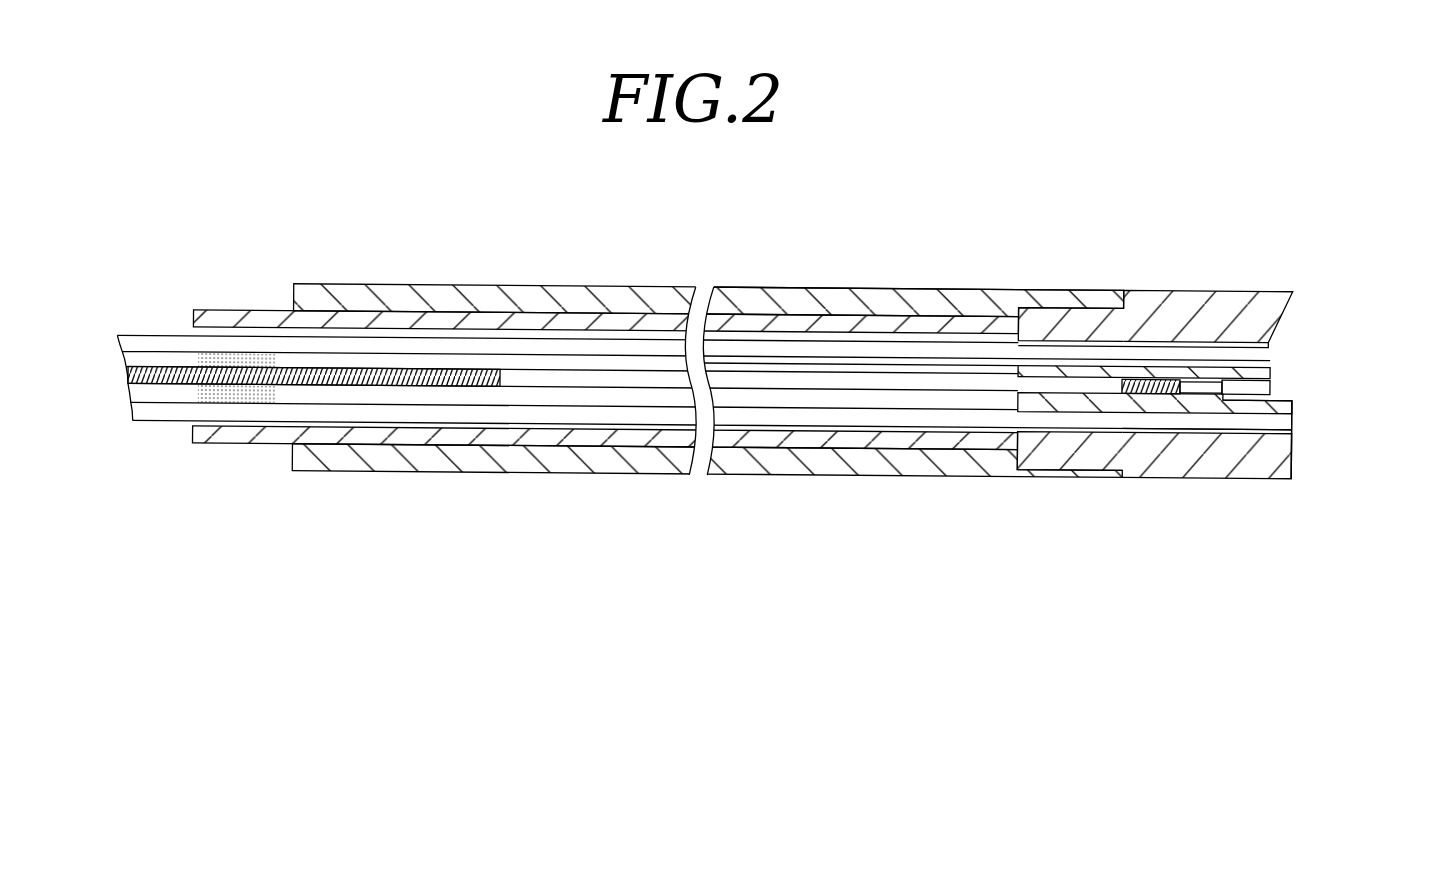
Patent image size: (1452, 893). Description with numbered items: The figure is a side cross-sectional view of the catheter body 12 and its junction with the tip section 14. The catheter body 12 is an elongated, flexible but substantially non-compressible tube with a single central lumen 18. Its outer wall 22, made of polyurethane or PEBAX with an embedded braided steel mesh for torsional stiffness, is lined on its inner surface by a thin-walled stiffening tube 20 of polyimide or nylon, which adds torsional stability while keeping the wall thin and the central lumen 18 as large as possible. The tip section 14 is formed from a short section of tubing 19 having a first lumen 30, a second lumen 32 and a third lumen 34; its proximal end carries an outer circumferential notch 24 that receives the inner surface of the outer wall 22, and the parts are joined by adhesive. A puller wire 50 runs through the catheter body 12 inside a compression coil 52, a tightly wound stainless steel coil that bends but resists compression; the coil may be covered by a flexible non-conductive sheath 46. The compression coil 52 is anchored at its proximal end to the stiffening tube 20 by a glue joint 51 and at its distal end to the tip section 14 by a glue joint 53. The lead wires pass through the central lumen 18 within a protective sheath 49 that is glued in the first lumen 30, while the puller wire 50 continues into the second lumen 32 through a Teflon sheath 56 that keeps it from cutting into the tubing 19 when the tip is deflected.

The catheter body 12 is at (930, 270).
The tip section 14 is at (1338, 420).
The central lumen 18 is at (615, 363).
The tubing 19 is at (1180, 318).
The stiffening tube 20 is at (470, 318).
The outer wall 22 is at (800, 302).
The outer circumferential notch 24 is at (1070, 464).
The first lumen 30 is at (1220, 425).
The second lumen 32 is at (1283, 395).
The third lumen 34 is at (1273, 346).
The non-conductive sheath 46 is at (572, 348).
The protective sheath 49 is at (962, 423).
The puller wire 50 is at (1210, 379).
The glue joint 51 is at (243, 354).
The compression coil 52 is at (373, 369).
The glue joint 53 is at (1133, 398).
The sheath 56 is at (1273, 382).